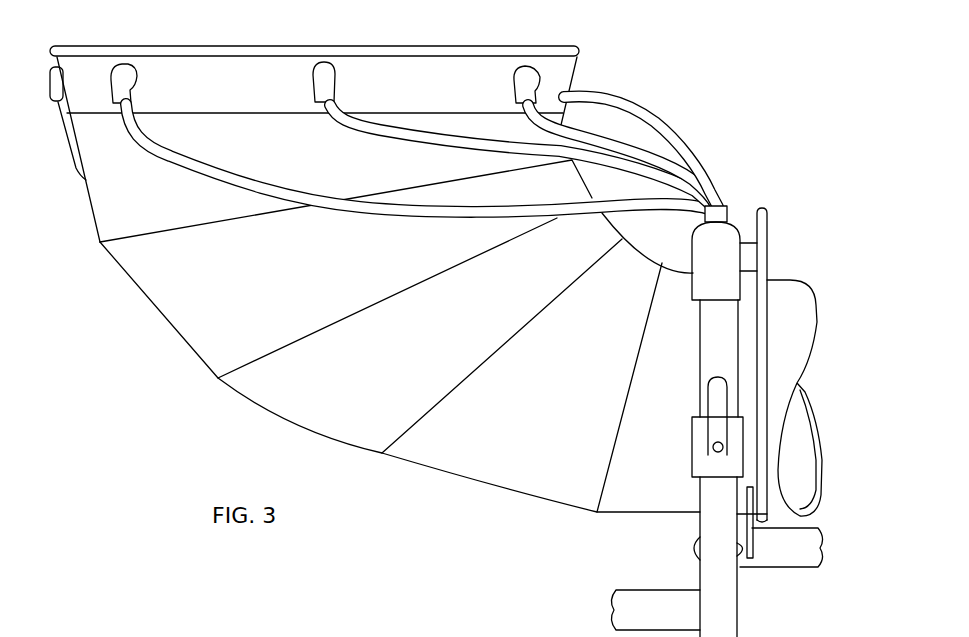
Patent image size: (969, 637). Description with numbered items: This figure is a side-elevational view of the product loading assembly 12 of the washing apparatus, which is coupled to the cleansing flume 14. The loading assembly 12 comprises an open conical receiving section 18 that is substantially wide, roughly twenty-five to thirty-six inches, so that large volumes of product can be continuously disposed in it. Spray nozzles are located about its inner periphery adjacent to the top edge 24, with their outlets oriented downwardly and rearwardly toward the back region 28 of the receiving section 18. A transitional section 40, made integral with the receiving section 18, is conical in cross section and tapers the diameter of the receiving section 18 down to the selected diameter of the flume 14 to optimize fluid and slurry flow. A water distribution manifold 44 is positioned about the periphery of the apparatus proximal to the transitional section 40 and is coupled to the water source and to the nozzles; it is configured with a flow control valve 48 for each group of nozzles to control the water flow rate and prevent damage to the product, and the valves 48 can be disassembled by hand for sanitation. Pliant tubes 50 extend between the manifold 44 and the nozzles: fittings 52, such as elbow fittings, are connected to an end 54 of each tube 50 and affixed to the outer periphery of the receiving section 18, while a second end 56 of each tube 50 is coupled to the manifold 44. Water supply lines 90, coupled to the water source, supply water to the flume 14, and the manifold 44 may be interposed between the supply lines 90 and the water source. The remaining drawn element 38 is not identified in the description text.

The product loading assembly 12 is at (732, 191).
The cleansing flume 14 is at (817, 325).
The open conical receiving section 18 is at (80, 244).
The top edge 24 is at (142, 53).
The back region 28 is at (52, 118).
The supply hose 38 is at (570, 77).
The transitional section 40 is at (576, 521).
The water distribution manifold 44 is at (684, 373).
The flow control valve 48 is at (695, 443).
The pliant tube 50 is at (390, 212).
The fitting 52 is at (330, 78).
The end of tube 54 is at (327, 104).
The second end of tube 56 is at (713, 195).
The water supply line 90 is at (790, 560).